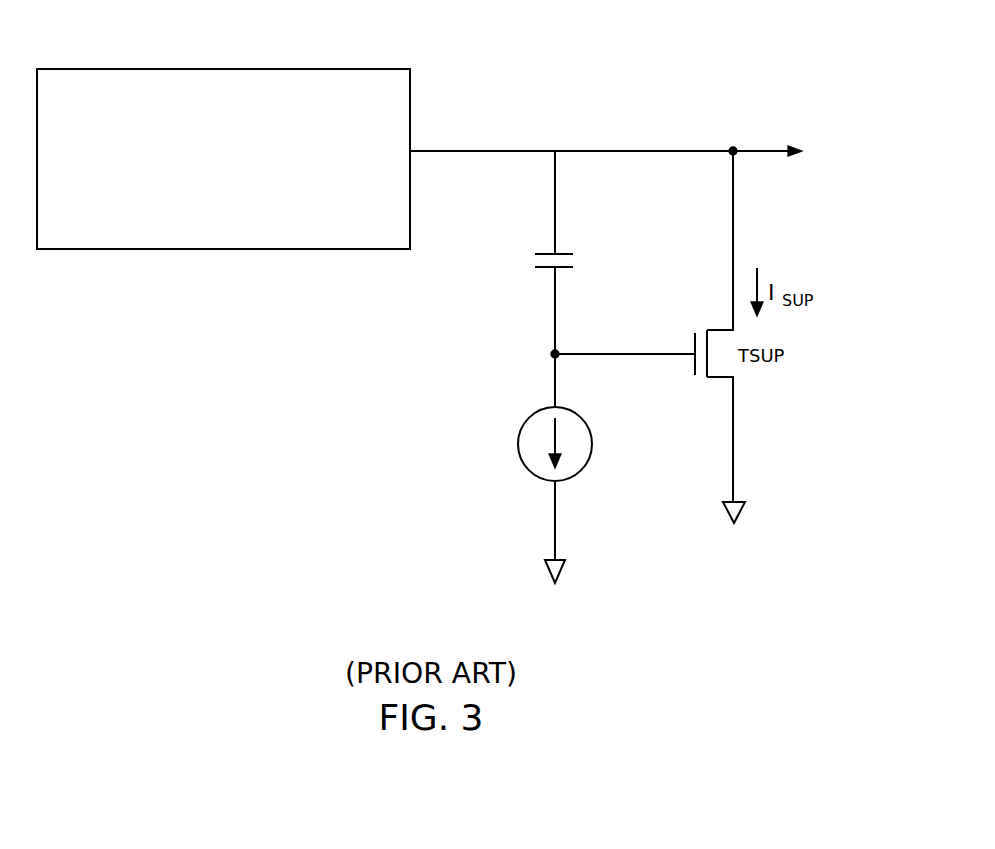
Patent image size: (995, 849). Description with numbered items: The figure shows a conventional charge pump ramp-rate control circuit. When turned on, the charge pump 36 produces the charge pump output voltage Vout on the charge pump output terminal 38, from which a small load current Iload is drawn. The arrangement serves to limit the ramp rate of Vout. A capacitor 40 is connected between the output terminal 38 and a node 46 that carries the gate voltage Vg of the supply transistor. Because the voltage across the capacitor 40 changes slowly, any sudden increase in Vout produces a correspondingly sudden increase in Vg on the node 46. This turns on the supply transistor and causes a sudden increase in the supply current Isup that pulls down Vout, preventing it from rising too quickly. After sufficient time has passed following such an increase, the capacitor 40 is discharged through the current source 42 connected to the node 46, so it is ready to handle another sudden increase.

The charge pump 36 is at (303, 69).
The charge pump output terminal 38 is at (735, 148).
The capacitor 40 is at (590, 259).
The current source 42 is at (518, 437).
The node 46 is at (558, 352).